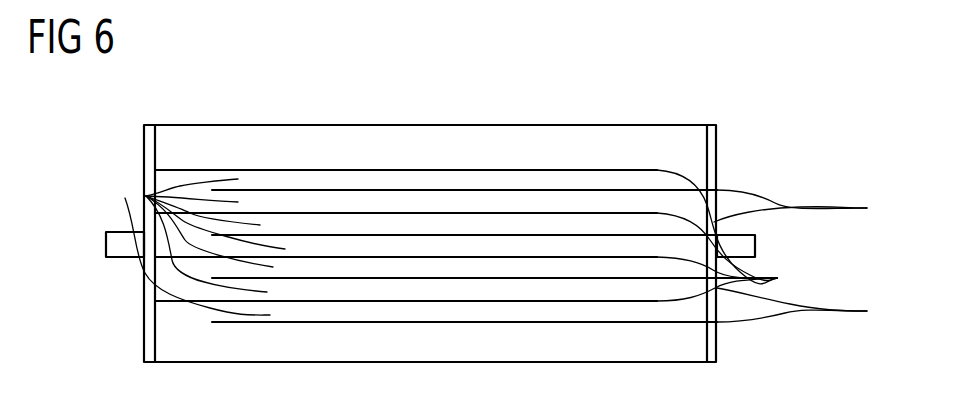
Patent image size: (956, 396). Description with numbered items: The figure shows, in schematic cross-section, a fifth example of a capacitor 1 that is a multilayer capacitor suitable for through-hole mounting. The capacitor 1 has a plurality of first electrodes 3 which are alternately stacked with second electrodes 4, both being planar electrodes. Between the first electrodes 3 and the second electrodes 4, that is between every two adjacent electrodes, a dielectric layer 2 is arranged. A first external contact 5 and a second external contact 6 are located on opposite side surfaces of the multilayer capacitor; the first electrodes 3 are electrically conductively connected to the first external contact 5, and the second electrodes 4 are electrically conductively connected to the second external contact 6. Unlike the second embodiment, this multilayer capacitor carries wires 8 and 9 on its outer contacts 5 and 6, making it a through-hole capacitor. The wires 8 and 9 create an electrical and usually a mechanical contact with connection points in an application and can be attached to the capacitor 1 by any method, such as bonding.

The capacitor 1 is at (750, 110).
The dielectric layer 2 is at (146, 196).
The first electrodes 3 is at (867, 208).
The second electrodes 4 is at (726, 235).
The first external contact 5 is at (710, 143).
The second external contact 6 is at (145, 165).
The wire 8 is at (742, 241).
The wire 9 is at (118, 240).